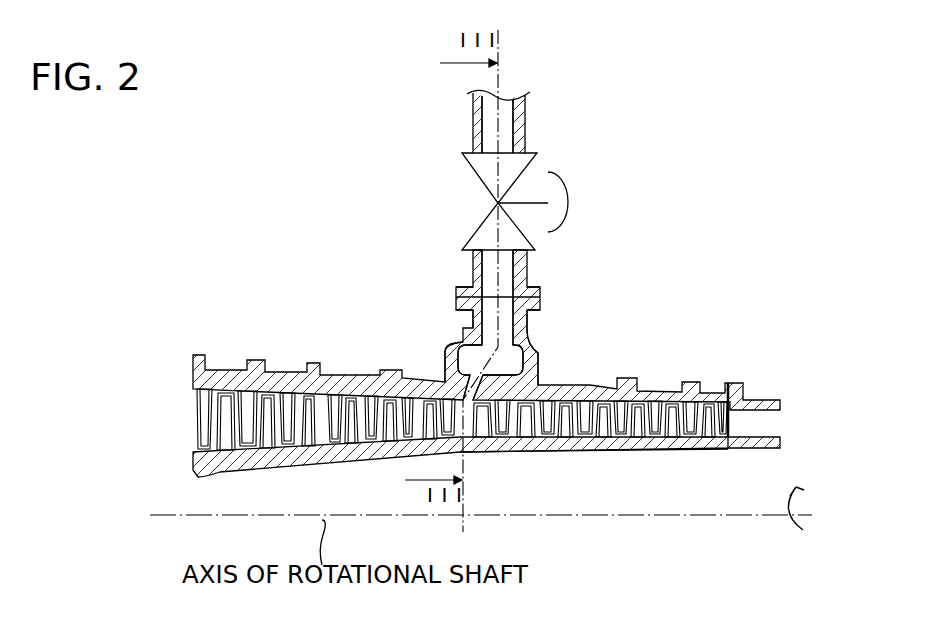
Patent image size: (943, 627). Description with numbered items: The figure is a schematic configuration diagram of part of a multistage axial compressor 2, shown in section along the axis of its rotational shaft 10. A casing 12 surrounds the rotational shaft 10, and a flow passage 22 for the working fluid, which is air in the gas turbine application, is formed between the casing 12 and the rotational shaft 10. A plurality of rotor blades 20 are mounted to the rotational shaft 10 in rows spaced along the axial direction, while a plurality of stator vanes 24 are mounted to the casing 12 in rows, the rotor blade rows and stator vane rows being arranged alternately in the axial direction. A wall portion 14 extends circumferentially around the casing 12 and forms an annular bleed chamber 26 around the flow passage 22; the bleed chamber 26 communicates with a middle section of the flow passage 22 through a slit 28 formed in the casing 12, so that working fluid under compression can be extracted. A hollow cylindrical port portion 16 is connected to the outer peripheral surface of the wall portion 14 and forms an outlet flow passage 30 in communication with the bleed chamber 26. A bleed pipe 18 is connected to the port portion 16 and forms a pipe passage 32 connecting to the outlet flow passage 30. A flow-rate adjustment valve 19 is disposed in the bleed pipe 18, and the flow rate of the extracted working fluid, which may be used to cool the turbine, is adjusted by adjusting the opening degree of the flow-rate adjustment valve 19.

The multistage axial compressor 2 is at (682, 267).
The rotational shaft 10 is at (577, 452).
The casing 12 is at (590, 385).
The wall portion 14 is at (540, 349).
The port portion 16 is at (513, 322).
The bleed pipe 18 is at (472, 126).
The flow-rate adjustment valve 19 is at (535, 153).
The rotor blade 20 is at (353, 438).
The flow passage 22 is at (323, 398).
The stator vane 24 is at (375, 398).
The bleed chamber 26 is at (472, 357).
The slit 28 is at (466, 384).
The outlet flow passage 30 is at (488, 311).
The pipe passage 32 is at (504, 117).